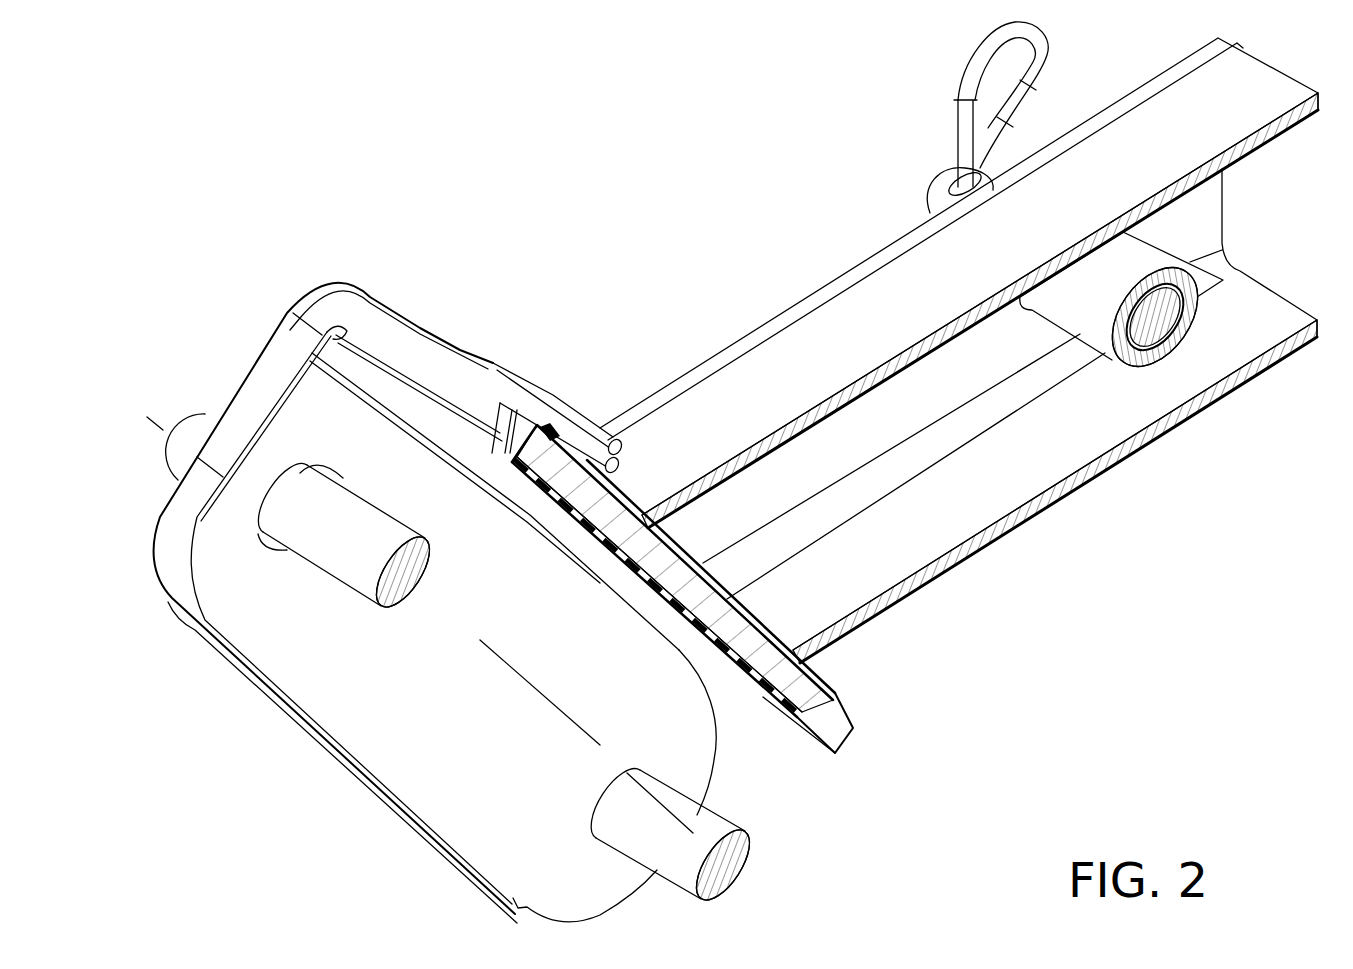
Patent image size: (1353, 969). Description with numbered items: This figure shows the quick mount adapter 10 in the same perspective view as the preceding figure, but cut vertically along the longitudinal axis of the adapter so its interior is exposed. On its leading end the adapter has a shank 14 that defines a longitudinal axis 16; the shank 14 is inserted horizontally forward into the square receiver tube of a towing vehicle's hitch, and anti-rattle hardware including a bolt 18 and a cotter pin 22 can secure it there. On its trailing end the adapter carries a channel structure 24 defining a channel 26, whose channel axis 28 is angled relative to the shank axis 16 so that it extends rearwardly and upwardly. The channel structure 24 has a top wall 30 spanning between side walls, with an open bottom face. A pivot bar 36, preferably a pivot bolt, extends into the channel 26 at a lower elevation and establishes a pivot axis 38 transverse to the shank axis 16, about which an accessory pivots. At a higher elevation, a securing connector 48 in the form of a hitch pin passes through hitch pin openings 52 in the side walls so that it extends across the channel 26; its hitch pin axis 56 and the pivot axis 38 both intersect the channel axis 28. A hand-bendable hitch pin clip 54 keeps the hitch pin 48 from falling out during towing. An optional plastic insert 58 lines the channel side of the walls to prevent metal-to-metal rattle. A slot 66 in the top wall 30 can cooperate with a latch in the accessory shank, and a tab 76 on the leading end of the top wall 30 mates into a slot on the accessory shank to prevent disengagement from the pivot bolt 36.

The quick mount adapter 10 is at (442, 133).
The shank 14 is at (959, 350).
The longitudinal axis 16 is at (1297, 208).
The bolt 18 is at (1157, 318).
The cotter pin 22 is at (965, 117).
The channel structure 24 is at (348, 582).
The channel 26 is at (513, 637).
The channel axis 28 is at (502, 663).
The top wall 30 is at (718, 533).
The pivot bar 36 is at (727, 839).
The pivot axis 38 is at (798, 908).
The securing connector 48 is at (356, 618).
The hitch pin openings 52 is at (340, 547).
The hitch pin clip 54 is at (553, 407).
The hitch pin axis 56 is at (468, 612).
The insert 58 is at (483, 787).
The slot 66 is at (463, 390).
The tab 76 is at (833, 730).